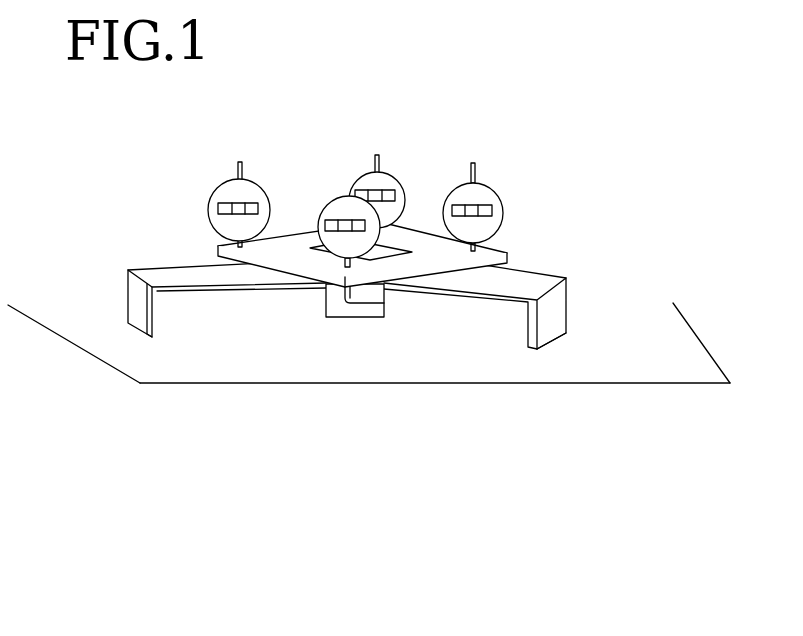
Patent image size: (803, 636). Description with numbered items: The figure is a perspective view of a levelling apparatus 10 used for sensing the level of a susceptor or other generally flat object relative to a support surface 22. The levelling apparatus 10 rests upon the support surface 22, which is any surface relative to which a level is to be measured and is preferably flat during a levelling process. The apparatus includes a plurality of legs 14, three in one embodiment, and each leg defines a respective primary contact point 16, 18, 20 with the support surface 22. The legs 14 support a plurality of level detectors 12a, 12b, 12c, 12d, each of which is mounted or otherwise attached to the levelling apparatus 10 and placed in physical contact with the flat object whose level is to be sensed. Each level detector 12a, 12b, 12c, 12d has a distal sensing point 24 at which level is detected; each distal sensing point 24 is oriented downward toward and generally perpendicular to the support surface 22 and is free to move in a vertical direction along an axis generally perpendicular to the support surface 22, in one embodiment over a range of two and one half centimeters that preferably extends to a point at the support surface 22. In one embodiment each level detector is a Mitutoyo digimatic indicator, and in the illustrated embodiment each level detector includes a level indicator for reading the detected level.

The levelling apparatus 10 is at (606, 133).
The level detector 12a is at (258, 185).
The level detector 12b is at (397, 180).
The level detector 12c is at (498, 197).
The level detector 12d is at (333, 196).
The leg 14 is at (128, 295).
The primary contact point 16 is at (133, 328).
The primary contact point 18 is at (365, 317).
The primary contact point 20 is at (553, 340).
The support surface 22 is at (210, 360).
The distal sensing point 24 is at (385, 298).